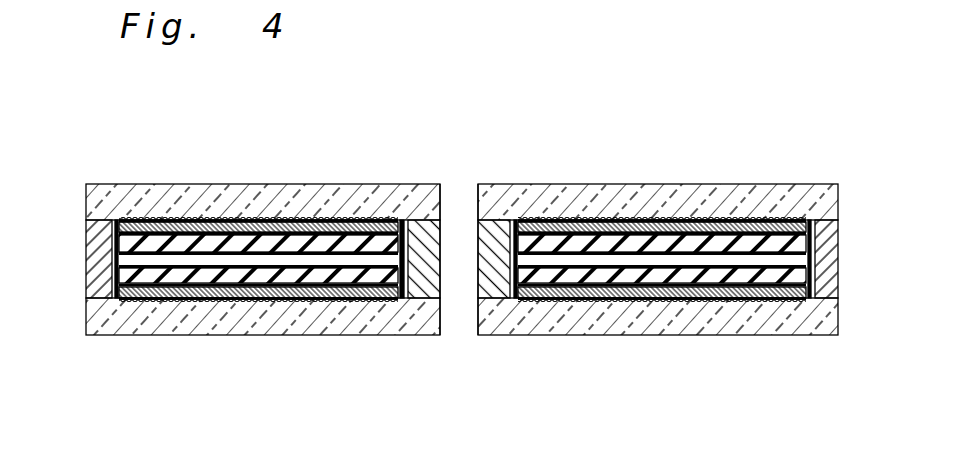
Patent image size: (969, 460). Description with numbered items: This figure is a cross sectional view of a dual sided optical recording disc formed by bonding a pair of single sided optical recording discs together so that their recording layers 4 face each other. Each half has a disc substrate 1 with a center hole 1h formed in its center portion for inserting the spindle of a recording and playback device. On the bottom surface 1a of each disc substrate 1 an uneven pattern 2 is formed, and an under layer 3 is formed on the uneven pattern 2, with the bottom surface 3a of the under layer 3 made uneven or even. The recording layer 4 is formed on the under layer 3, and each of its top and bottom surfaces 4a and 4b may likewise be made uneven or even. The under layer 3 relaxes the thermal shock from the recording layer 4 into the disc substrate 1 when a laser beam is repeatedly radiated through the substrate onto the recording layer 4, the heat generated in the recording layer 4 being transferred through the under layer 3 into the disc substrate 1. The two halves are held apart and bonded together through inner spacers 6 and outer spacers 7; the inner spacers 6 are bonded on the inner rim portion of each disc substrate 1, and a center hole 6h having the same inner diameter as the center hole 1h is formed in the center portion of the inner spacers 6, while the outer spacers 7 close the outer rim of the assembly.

The disc substrate 1 is at (642, 205).
The bottom surface of the disc substrate 1a is at (521, 208).
The center hole 1h is at (452, 186).
The uneven pattern 2 is at (703, 246).
The under layer 3 is at (741, 232).
The bottom surface of the under layer 3a is at (668, 234).
The recording layer 4 is at (776, 223).
The top surface of the recording layer 4a is at (726, 224).
The bottom surface of the recording layer 4b is at (758, 230).
The inner spacers 6 is at (426, 240).
The center hole of the inner spacers 6h is at (476, 245).
The outer spacers 7 is at (840, 218).